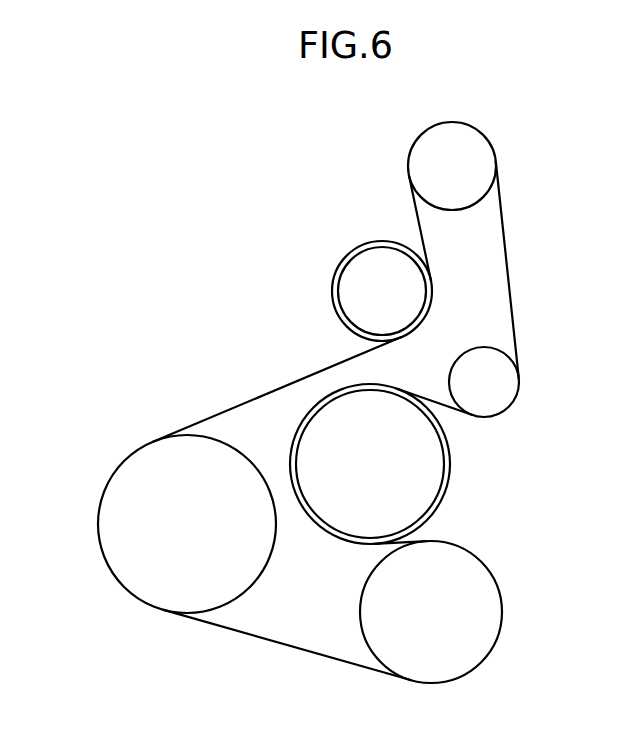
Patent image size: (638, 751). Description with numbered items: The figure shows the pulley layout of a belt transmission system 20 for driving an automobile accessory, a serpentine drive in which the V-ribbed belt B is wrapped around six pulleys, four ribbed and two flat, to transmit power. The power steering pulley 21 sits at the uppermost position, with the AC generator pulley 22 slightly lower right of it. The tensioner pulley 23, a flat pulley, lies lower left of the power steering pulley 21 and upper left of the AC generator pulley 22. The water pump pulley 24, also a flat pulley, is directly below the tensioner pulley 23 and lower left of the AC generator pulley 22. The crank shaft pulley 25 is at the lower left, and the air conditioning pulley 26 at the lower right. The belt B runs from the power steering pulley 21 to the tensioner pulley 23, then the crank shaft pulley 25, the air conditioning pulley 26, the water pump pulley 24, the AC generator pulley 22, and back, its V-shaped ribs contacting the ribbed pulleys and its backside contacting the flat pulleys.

The belt transmission system 20 is at (233, 203).
The V-ribbed belt B is at (273, 390).
The power steering pulley 21 is at (472, 150).
The AC generator pulley 22 is at (493, 385).
The tensioner pulley 23 is at (363, 280).
The water pump pulley 24 is at (420, 475).
The crank shaft pulley 25 is at (137, 563).
The air conditioning pulley 26 is at (477, 592).